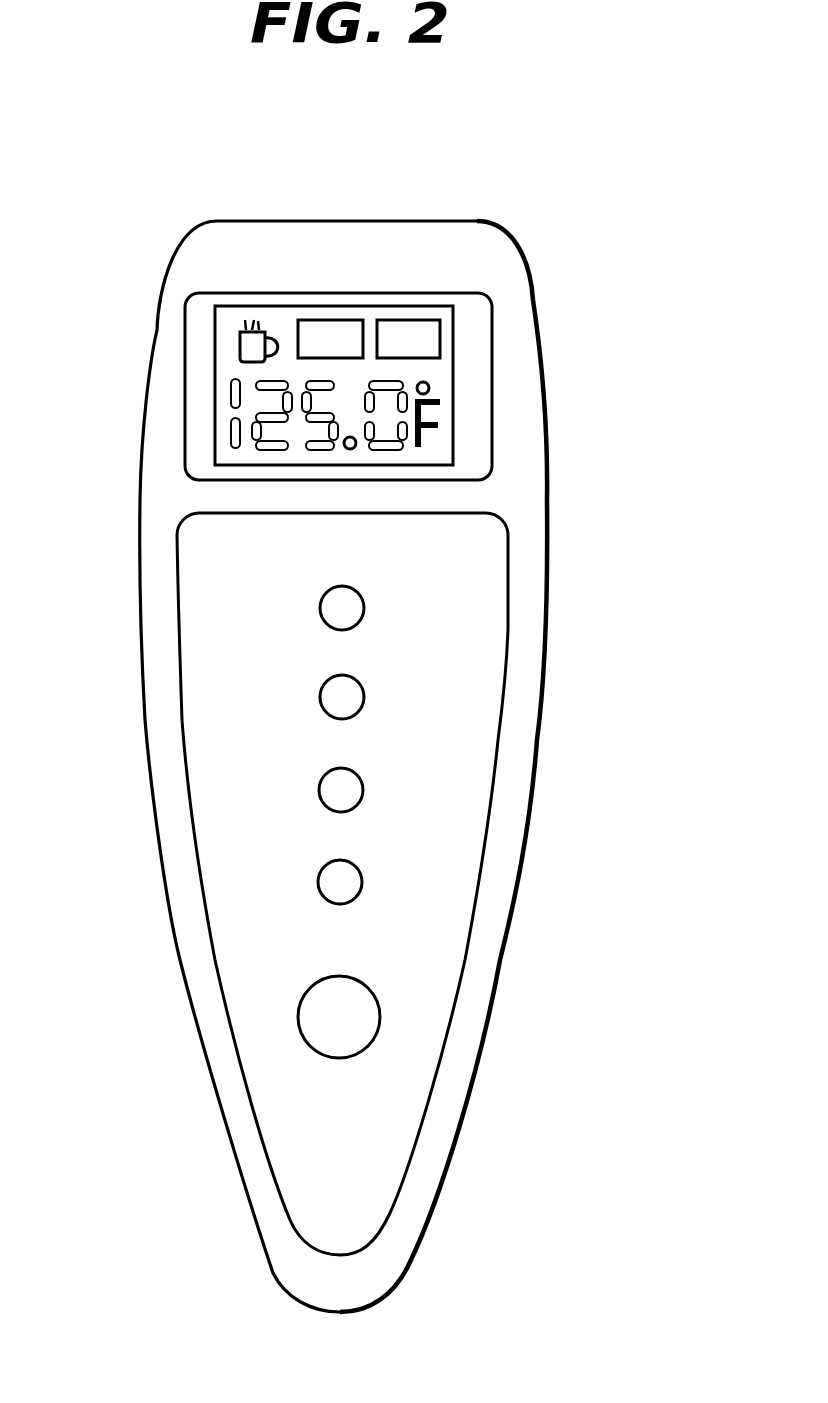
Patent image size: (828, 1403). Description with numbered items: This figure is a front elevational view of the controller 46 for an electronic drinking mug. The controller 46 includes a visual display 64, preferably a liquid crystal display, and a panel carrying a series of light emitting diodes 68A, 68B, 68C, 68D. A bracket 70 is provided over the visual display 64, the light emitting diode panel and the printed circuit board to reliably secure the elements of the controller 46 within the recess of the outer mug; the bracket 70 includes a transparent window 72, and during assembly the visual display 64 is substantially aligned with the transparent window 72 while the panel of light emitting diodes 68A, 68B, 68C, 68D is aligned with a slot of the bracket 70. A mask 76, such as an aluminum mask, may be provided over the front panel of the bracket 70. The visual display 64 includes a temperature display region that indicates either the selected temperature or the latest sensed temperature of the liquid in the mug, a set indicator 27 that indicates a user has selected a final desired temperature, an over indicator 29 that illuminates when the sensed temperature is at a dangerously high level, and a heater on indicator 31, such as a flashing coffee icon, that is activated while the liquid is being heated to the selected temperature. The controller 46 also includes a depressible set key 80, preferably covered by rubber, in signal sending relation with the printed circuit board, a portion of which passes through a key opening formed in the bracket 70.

The controller 46 is at (673, 262).
The bracket 70 is at (140, 618).
The transparent window 72 is at (472, 433).
The visual display 64 is at (455, 358).
The heater on indicator 31 is at (245, 318).
The set indicator 27 is at (322, 319).
The over indicator 29 is at (404, 319).
The mask 76 is at (272, 1168).
The light emitting diode 68A is at (320, 603).
The light emitting diode 68B is at (320, 692).
The light emitting diode 68C is at (319, 790).
The light emitting diode 68D is at (318, 880).
The depressible set key 80 is at (298, 1015).